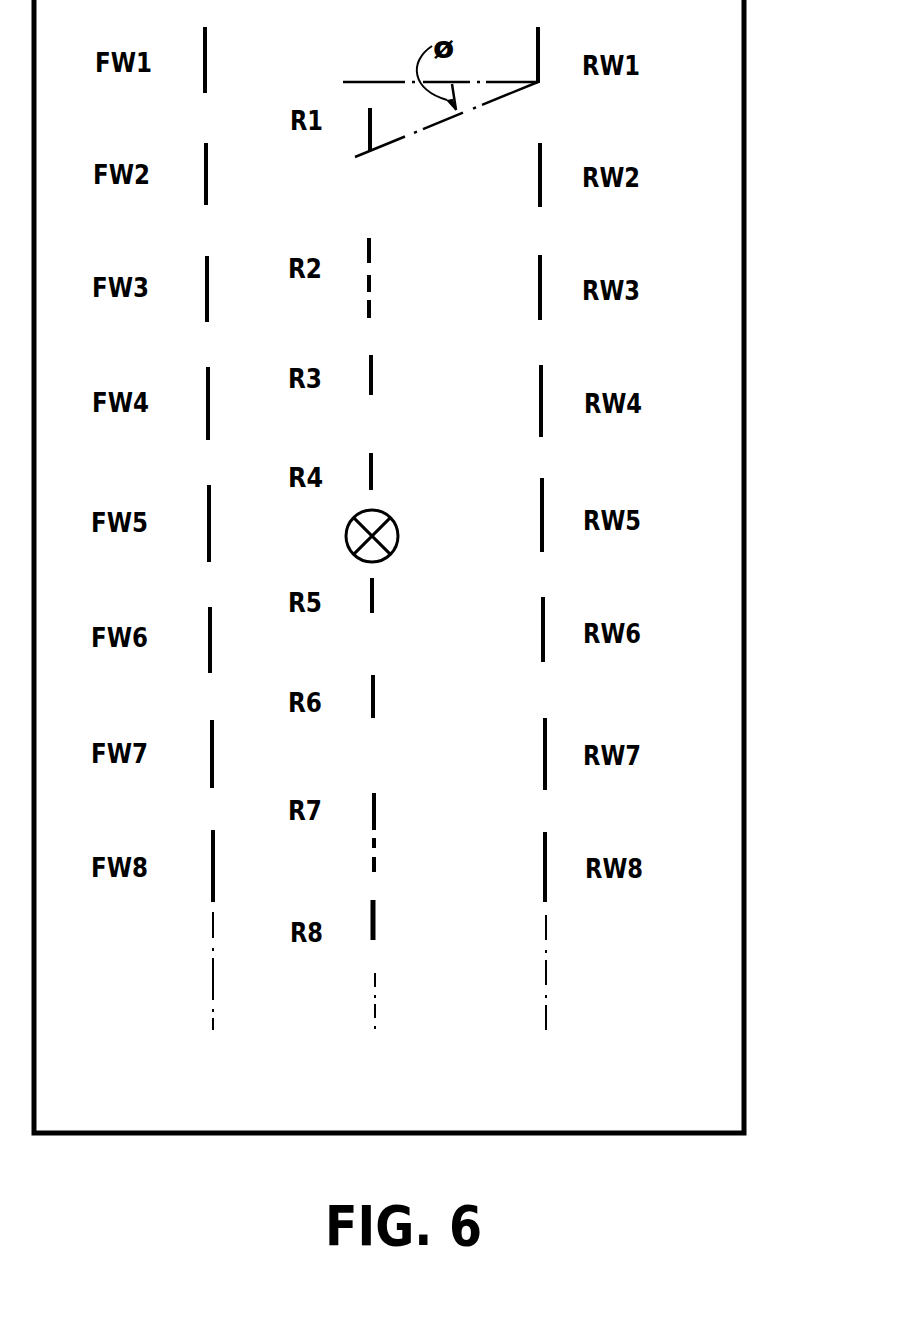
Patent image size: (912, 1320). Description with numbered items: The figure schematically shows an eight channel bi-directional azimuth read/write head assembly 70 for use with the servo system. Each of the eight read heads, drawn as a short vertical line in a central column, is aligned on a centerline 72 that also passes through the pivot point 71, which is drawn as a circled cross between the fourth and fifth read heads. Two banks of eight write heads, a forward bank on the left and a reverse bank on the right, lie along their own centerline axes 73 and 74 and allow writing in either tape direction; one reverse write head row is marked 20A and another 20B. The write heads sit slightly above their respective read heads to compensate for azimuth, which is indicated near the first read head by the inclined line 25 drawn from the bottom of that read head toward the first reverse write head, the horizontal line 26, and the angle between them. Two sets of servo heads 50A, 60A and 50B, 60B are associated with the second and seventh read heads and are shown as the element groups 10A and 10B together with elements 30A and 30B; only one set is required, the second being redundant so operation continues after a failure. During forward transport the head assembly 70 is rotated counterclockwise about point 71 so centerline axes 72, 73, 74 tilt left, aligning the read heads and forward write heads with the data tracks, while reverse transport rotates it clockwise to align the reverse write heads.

The head assembly 70 is at (745, 460).
The circumferential reference line 26 is at (383, 82).
The inclined sipe / groove line 25 is at (434, 125).
The rear wheel block row 20A is at (541, 148).
The rear wheel block row 20B is at (548, 738).
The tread element group 10A is at (367, 275).
The first sub-element 30A is at (371, 248).
The servo head 50A is at (371, 290).
The servo head 60A is at (371, 315).
The tread element group 10B is at (371, 828).
The first sub-element 30B is at (376, 808).
The servo head 50B is at (376, 842).
The servo head 60B is at (424, 866).
The pivot point 71 is at (397, 523).
The centerline 72 is at (373, 986).
The centerline axis 73 is at (215, 1002).
The centerline axis 74 is at (548, 976).